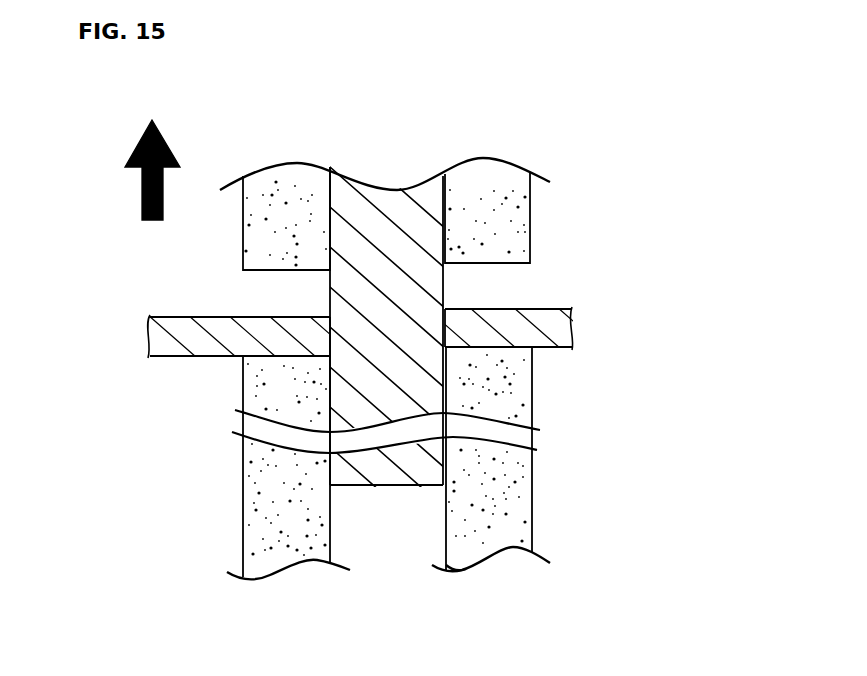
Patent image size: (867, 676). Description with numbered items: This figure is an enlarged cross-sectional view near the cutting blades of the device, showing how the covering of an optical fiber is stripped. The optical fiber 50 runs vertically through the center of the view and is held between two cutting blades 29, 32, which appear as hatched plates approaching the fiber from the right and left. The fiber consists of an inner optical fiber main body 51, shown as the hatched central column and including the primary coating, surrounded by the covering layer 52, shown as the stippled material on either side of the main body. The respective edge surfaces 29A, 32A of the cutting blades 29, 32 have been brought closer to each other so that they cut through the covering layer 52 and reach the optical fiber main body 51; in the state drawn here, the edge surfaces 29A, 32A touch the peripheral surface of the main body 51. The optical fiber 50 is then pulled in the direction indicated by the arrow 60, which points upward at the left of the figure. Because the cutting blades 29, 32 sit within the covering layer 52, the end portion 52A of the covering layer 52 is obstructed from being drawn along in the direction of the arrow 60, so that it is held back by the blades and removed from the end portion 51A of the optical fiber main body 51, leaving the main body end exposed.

The arrow 60 is at (140, 180).
The optical fiber 50 is at (352, 172).
The optical fiber main body 51 is at (380, 215).
The end portion of the optical fiber main body 51A is at (376, 490).
The covering layer 52 is at (488, 188).
The end portion of the covering layer 52A is at (500, 543).
The cutting blade 32 is at (157, 350).
The edge surface 32A is at (330, 328).
The cutting blade 29 is at (560, 335).
The edge surface 29A is at (447, 327).